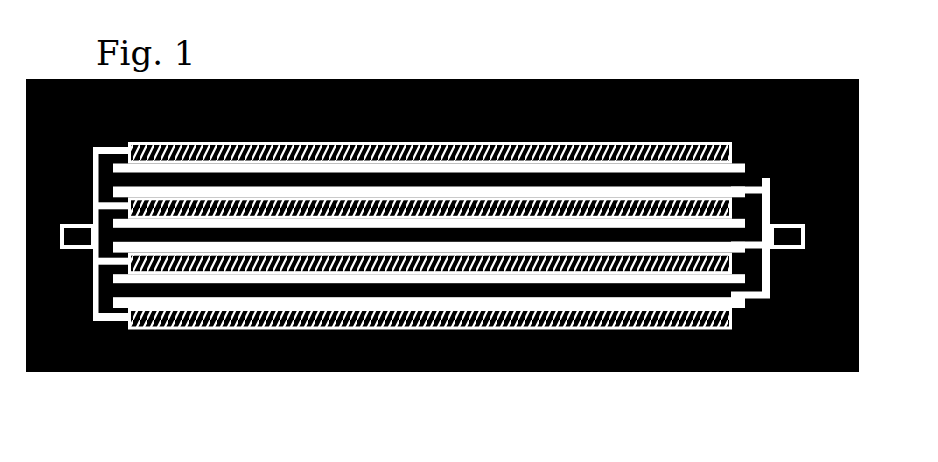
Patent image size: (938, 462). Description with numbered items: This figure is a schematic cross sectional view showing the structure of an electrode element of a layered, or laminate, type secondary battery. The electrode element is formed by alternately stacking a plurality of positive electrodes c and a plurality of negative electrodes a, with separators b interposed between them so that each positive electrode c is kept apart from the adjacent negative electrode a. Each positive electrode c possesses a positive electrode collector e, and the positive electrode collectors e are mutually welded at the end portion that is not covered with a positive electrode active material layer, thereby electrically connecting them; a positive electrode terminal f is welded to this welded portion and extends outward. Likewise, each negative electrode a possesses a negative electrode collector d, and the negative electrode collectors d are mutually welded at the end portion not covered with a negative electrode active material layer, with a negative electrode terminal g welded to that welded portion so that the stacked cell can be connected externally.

The negative electrode a is at (721, 143).
The separator b is at (751, 163).
The positive electrode c is at (232, 184).
The negative electrode collector d is at (93, 150).
The positive electrode collector e is at (779, 190).
The positive electrode terminal f is at (794, 218).
The negative electrode terminal g is at (75, 217).